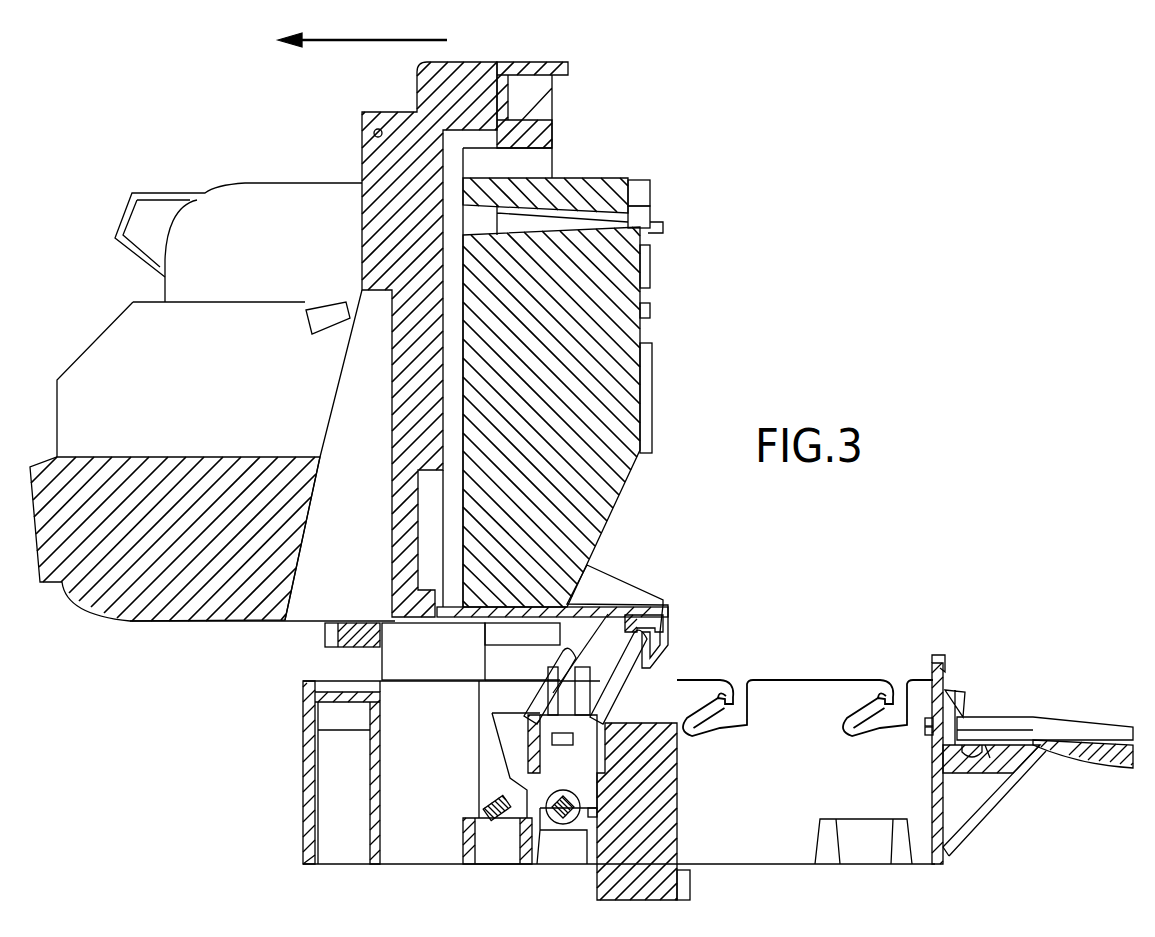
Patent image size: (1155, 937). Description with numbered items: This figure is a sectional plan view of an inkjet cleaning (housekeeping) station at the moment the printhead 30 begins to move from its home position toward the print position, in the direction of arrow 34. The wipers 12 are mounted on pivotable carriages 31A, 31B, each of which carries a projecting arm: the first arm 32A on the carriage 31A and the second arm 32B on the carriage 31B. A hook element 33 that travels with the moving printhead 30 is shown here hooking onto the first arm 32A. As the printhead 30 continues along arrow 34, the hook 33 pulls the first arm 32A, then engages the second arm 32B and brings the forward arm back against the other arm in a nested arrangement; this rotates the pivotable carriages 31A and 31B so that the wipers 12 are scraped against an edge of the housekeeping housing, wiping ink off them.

The arrow 34 is at (413, 40).
The printhead 30 is at (107, 362).
The second arm 32B is at (572, 643).
The first arm 32A is at (657, 600).
The hook element 33 is at (655, 660).
The wipers 12 is at (545, 664).
The pivotable carriage 31B is at (510, 750).
The printhead carriage assembly 31A is at (572, 767).